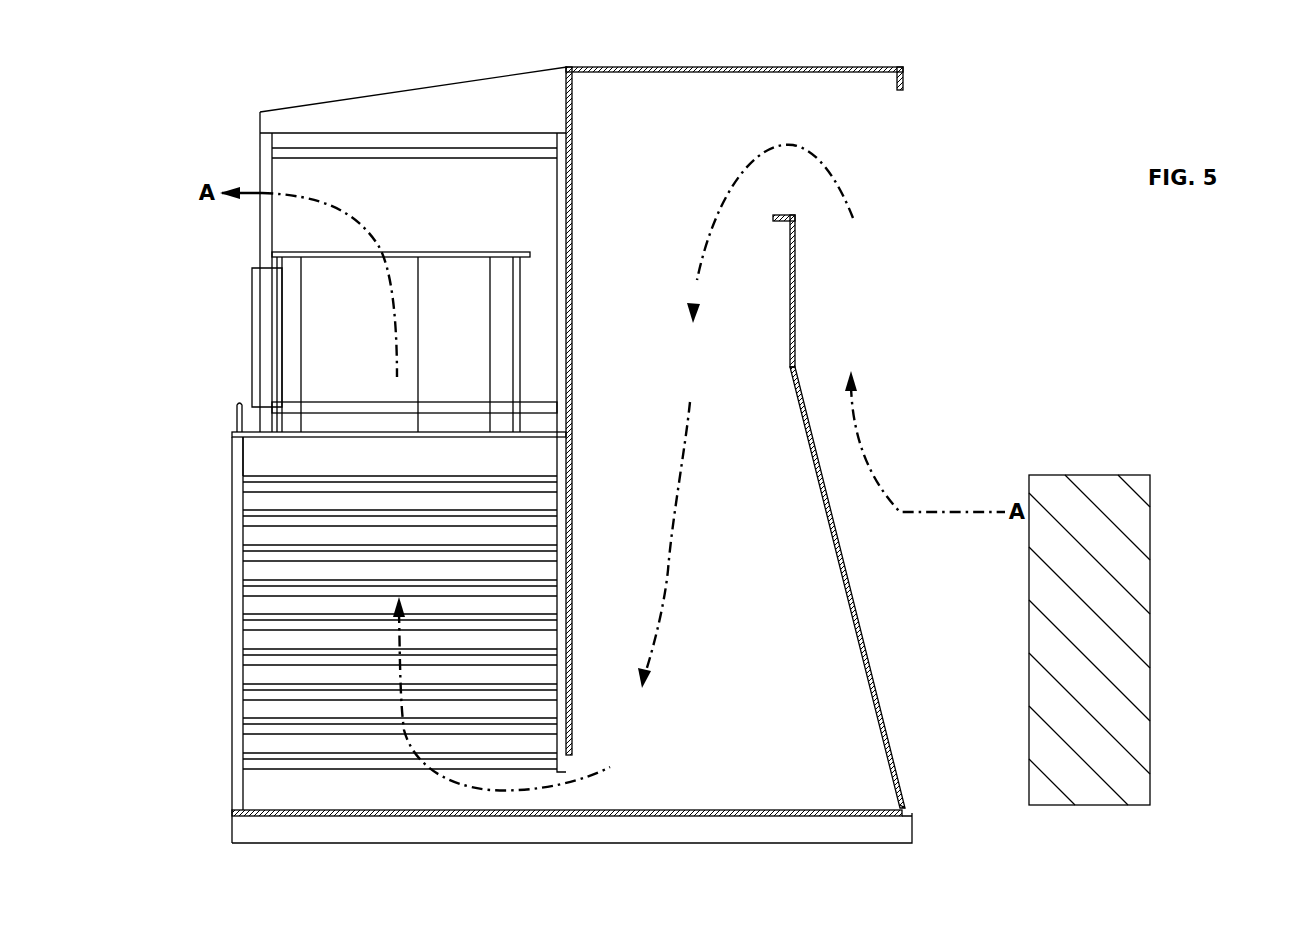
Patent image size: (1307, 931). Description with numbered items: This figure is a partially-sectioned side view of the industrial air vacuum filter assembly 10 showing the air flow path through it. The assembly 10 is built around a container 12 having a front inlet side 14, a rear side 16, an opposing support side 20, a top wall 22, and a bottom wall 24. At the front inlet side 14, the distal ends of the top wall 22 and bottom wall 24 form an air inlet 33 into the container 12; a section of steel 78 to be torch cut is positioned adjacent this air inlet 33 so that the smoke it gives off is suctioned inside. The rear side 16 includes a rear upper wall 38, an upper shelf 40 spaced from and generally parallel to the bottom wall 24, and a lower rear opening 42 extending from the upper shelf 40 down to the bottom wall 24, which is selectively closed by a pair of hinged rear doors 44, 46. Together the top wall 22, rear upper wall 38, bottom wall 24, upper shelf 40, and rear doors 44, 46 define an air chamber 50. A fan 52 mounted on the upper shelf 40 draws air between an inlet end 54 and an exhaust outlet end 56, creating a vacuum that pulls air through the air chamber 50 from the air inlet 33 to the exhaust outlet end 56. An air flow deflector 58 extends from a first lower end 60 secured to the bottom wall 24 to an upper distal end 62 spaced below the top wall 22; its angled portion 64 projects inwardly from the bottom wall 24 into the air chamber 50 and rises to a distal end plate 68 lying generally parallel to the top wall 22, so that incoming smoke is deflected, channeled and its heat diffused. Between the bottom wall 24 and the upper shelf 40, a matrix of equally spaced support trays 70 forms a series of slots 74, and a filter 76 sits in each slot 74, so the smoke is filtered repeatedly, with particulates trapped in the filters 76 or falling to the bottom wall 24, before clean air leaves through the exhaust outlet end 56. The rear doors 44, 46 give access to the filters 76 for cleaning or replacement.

The air vacuum filter assembly 10 is at (1046, 90).
The container 12 is at (567, 67).
The front inlet side 14 is at (902, 91).
The rear side 16 is at (260, 133).
The support side 20 is at (720, 843).
The top wall 22 is at (763, 67).
The bottom wall 24 is at (797, 813).
The air inlet 33 is at (868, 224).
The rear upper wall 38 is at (573, 232).
The upper shelf 40 is at (547, 430).
The lower rear opening 42 is at (243, 778).
The rear door 44 is at (187, 640).
The rear door 46 is at (232, 566).
The air chamber 50 is at (751, 608).
The fan 52 is at (292, 332).
The inlet end 54 is at (423, 437).
The exhaust outlet end 56 is at (302, 252).
The deflector 58 is at (860, 610).
The first lower end 60 is at (905, 808).
The upper distal end 62 is at (798, 210).
The angled portion 64 is at (872, 680).
The distal end plate 68 is at (773, 222).
The support trays 70 is at (248, 522).
The slots 74 is at (243, 638).
The filter 76 is at (243, 718).
The section of steel 78 is at (1138, 585).